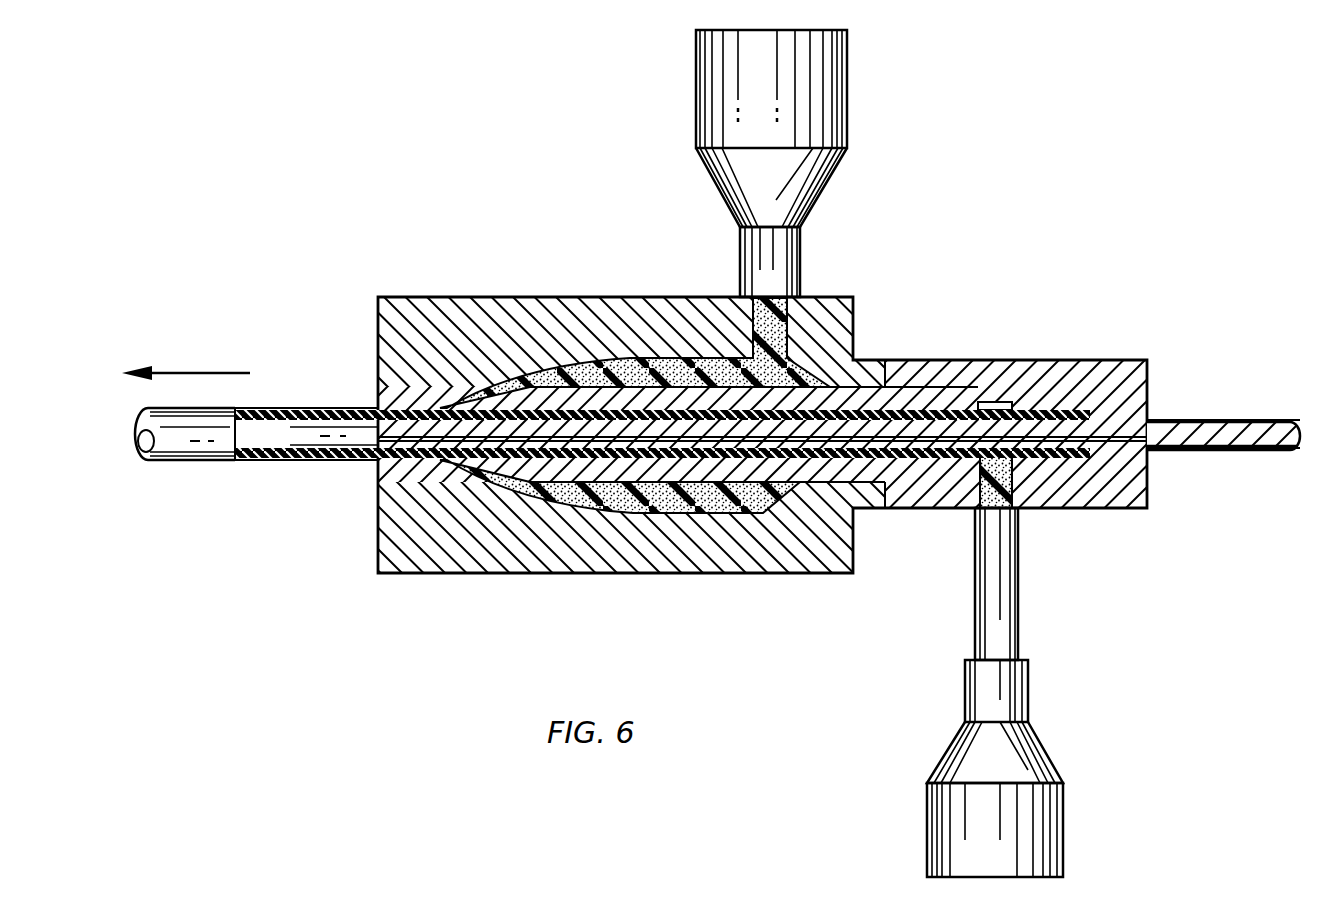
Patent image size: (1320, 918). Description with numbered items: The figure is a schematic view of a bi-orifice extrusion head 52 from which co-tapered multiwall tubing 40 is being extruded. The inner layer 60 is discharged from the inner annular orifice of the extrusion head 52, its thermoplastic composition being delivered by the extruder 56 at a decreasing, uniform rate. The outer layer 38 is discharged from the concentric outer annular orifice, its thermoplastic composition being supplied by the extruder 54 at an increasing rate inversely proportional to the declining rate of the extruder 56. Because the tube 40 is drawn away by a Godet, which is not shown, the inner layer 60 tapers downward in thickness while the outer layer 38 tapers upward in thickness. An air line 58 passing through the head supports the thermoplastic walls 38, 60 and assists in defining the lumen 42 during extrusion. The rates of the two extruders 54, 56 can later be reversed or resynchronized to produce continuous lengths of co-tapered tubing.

The outer layer 38 is at (329, 381).
The tubing 40 is at (183, 443).
The lumen 42 is at (358, 435).
The bi-orifice extrusion head 52 is at (603, 572).
The extruder 54 is at (824, 110).
The extruder 56 is at (1045, 827).
The air line 58 is at (1248, 393).
The inner layer 60 is at (288, 459).